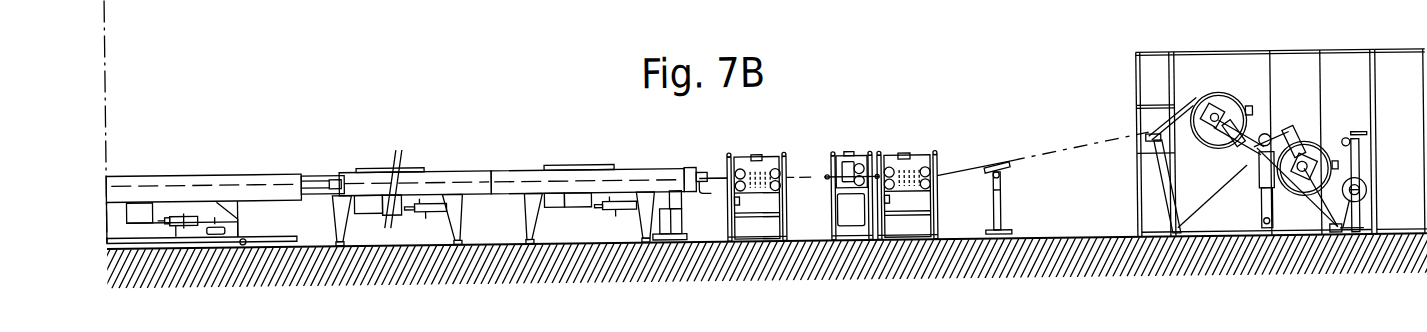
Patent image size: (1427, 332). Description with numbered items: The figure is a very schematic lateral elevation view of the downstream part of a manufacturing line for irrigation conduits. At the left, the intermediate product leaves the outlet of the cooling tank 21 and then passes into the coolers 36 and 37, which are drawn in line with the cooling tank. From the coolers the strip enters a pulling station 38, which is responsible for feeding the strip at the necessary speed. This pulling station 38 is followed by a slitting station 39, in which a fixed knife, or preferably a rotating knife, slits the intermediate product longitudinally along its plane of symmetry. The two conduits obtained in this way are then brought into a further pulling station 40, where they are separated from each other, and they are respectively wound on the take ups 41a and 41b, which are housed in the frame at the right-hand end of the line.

The cooling tank 21 is at (197, 178).
The cooler 36 is at (457, 180).
The cooler 37 is at (638, 178).
The pulling station 38 is at (753, 167).
The slitting station 39 is at (857, 170).
The pulling station 40 is at (907, 171).
The take up 41a is at (1222, 86).
The take up 41b is at (1403, 86).